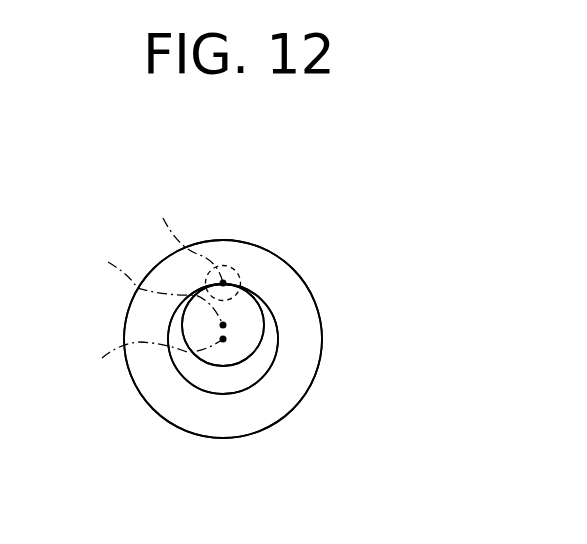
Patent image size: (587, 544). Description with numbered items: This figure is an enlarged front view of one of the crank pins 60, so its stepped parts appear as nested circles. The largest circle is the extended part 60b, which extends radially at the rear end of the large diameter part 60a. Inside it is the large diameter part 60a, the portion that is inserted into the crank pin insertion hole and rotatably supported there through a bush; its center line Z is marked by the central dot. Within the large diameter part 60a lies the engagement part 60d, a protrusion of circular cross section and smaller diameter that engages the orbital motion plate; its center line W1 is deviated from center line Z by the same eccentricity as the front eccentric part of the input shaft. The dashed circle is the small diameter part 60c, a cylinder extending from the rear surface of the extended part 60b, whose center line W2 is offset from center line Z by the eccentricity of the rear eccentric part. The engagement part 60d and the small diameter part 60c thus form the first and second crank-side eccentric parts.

The crank pin 60 is at (232, 240).
The large diameter part 60a is at (230, 383).
The extended part 60b is at (302, 368).
The small diameter part 60c is at (242, 273).
The engagement part 60d is at (245, 320).
The center line of the engagement part W1 is at (140, 281).
The center line of the small diameter part W2 is at (181, 229).
The center line of the large diameter part Z is at (151, 361).